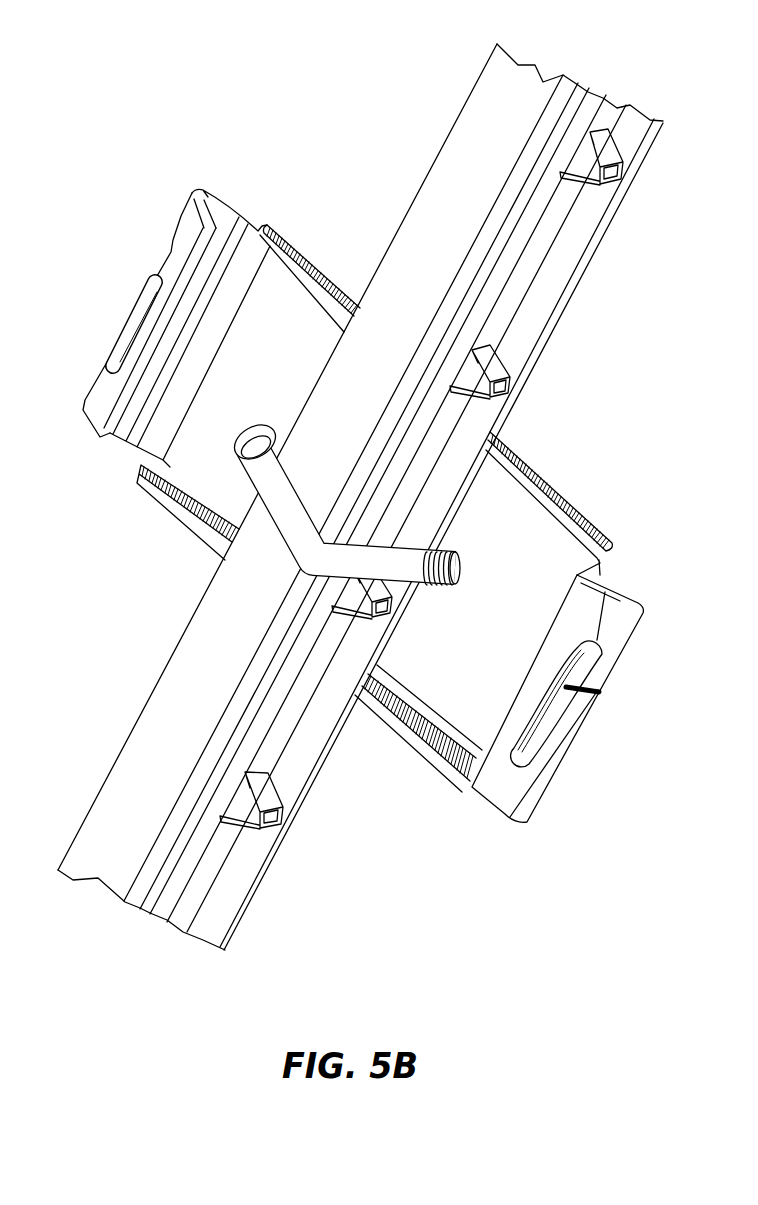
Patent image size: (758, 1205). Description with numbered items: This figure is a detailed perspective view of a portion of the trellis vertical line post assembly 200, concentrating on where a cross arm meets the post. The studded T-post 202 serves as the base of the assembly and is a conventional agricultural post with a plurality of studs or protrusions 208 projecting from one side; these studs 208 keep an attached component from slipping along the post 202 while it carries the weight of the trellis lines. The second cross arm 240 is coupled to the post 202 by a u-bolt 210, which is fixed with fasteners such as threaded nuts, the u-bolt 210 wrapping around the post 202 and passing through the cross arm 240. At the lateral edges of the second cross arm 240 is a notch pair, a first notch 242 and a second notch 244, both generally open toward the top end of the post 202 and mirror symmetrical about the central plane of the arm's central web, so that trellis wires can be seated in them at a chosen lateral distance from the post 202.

The trellis vertical line post assembly 200 is at (124, 60).
The studded T-post 202 is at (443, 173).
The studs or protrusions 208 is at (620, 172).
The u-bolt 210 is at (262, 478).
The second cross arm 240 is at (533, 518).
The first notch 242 is at (146, 257).
The second notch 244 is at (612, 667).